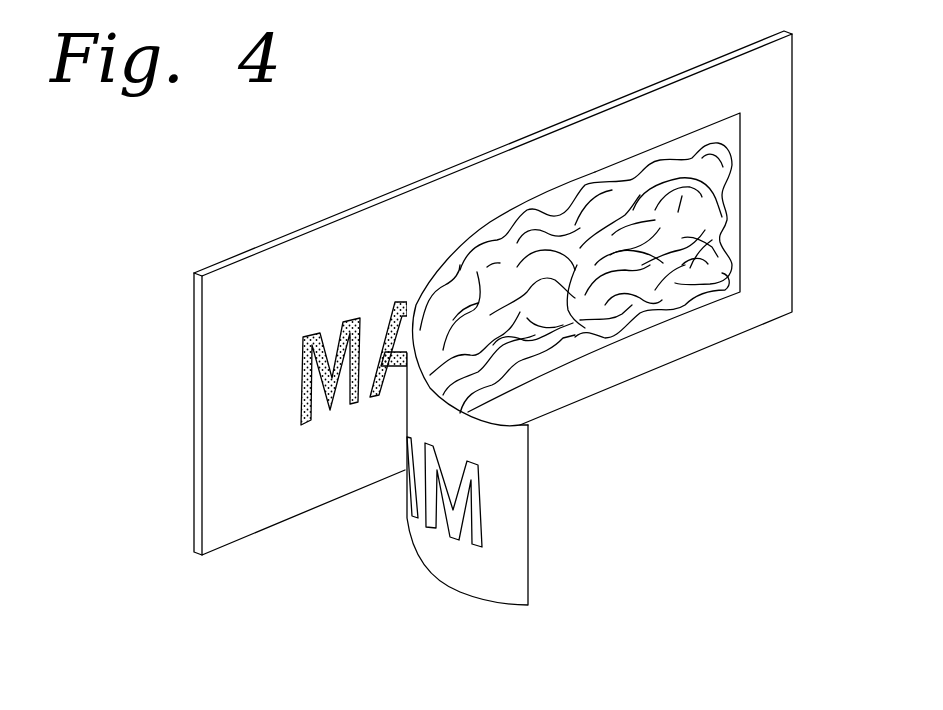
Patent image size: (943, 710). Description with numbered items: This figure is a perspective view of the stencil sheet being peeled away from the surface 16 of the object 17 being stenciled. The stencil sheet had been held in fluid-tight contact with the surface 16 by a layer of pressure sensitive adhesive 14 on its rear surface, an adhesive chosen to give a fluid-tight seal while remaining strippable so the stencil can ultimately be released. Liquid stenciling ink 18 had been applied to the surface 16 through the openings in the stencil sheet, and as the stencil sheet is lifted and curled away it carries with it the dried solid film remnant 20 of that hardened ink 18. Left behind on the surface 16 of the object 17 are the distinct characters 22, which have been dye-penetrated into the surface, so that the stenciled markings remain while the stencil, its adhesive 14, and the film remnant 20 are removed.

The pressure sensitive adhesive 14 is at (512, 550).
The surface of object to be stenciled 16 is at (240, 518).
The object to be stenciled 17 is at (197, 512).
The stenciling ink 18 is at (543, 237).
The solid film remnant 20 is at (468, 467).
The dye-stenciled characters 22 is at (313, 333).